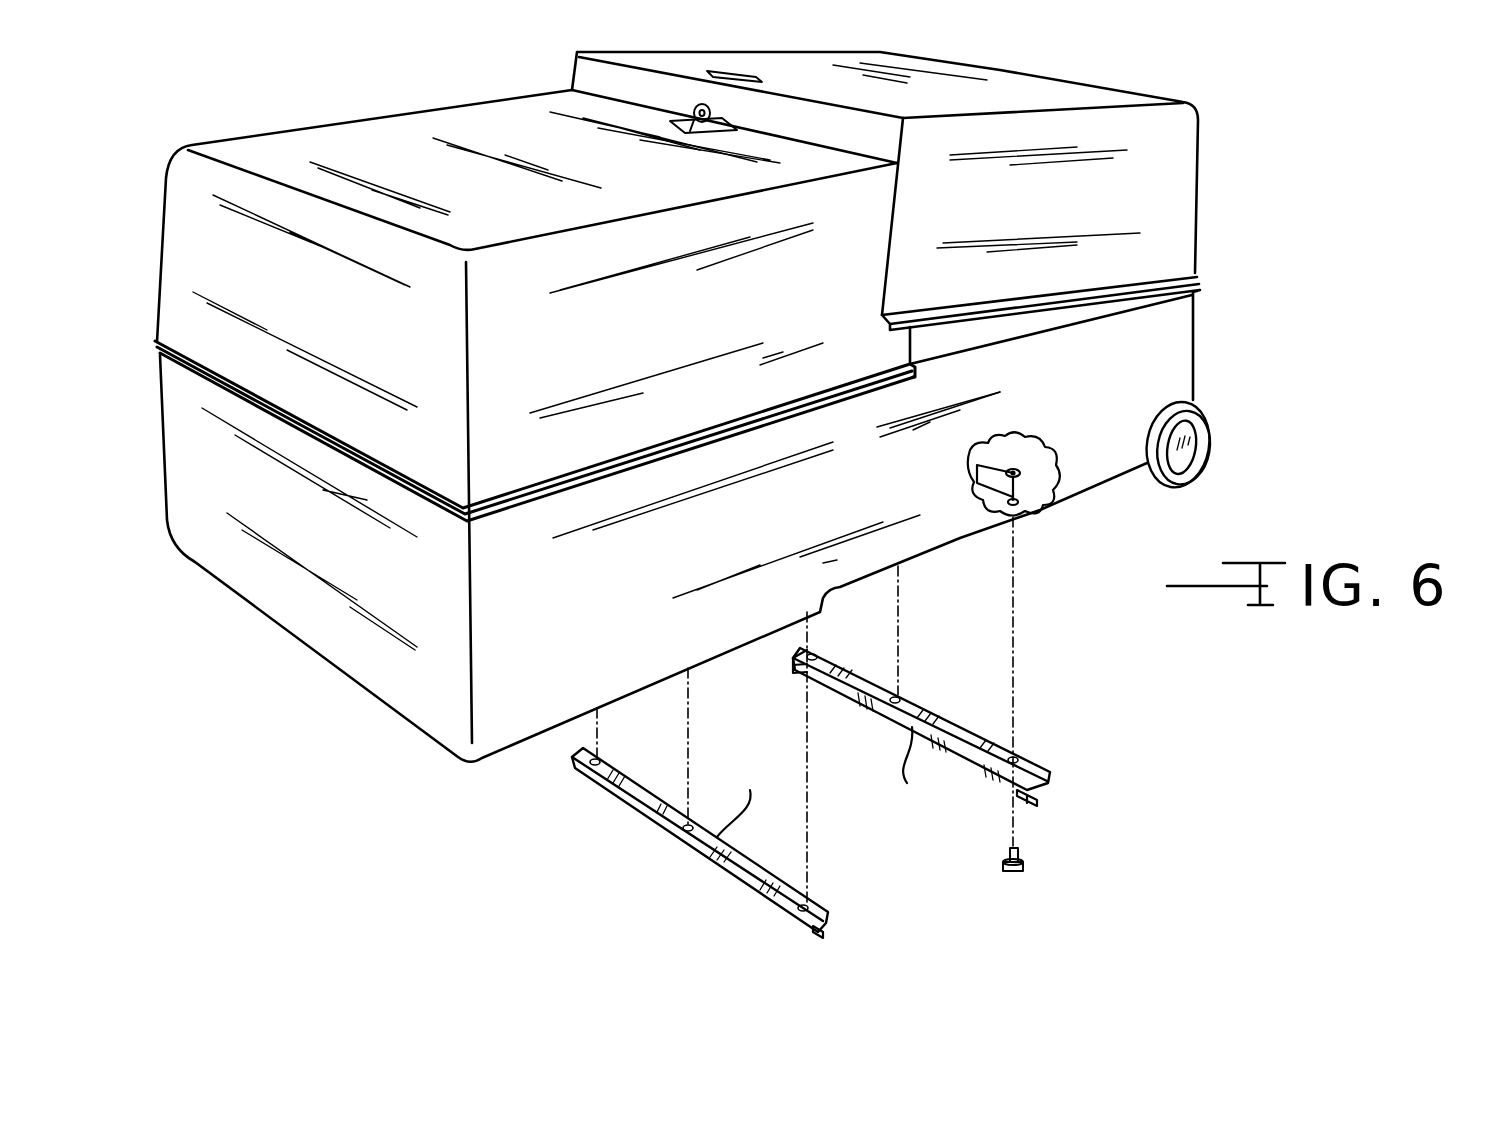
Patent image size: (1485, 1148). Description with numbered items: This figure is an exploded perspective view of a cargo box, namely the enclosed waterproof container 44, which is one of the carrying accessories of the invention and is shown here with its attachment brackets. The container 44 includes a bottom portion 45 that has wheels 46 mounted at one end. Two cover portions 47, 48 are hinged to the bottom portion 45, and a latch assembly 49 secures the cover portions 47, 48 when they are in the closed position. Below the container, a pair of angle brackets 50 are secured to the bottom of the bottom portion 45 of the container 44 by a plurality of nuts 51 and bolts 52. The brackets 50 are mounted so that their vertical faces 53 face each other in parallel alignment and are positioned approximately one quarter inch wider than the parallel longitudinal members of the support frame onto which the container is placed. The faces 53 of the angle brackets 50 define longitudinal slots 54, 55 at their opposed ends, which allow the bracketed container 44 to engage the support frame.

The enclosed waterproof container 44 is at (739, 407).
The bottom portion 45 is at (660, 580).
The wheels 46 is at (1210, 442).
The cover portion 47 is at (387, 331).
The cover portion 48 is at (1067, 213).
The latch assembly 49 is at (698, 124).
The angle brackets 50 is at (937, 713).
The nuts 51 is at (977, 465).
The bolts 52 is at (1024, 851).
The vertical faces 53 is at (830, 782).
The longitudinal slot 54 is at (793, 668).
The longitudinal slot 55 is at (1010, 790).